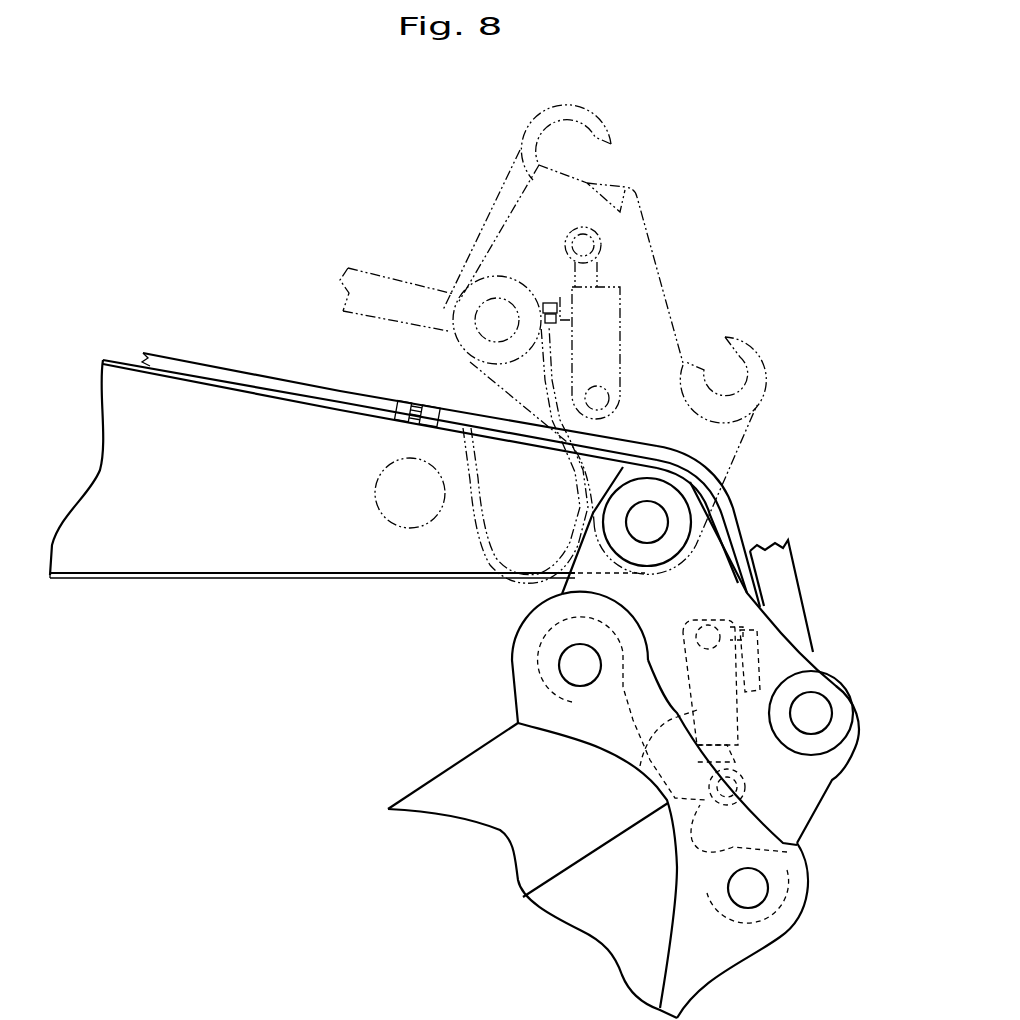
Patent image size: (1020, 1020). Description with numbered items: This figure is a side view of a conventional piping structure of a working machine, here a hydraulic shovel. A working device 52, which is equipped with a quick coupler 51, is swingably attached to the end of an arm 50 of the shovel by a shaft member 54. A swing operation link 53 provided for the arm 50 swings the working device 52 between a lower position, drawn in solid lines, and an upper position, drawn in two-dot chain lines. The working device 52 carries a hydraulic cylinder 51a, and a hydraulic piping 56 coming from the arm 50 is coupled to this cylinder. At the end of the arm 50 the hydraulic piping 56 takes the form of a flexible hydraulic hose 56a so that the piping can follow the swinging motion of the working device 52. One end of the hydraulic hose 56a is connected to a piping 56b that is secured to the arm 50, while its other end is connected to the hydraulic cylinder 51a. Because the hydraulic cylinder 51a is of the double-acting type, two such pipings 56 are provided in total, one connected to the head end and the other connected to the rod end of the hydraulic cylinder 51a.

The arm 50 is at (138, 581).
The quick coupler 51 is at (646, 227).
The hydraulic cylinder 51a is at (640, 768).
The working device 52 is at (787, 933).
The swing operation link 53 is at (370, 267).
The shaft member 54 is at (668, 502).
The hydraulic piping 56 is at (183, 353).
The hydraulic hose 56a is at (622, 442).
The piping 56b is at (288, 380).